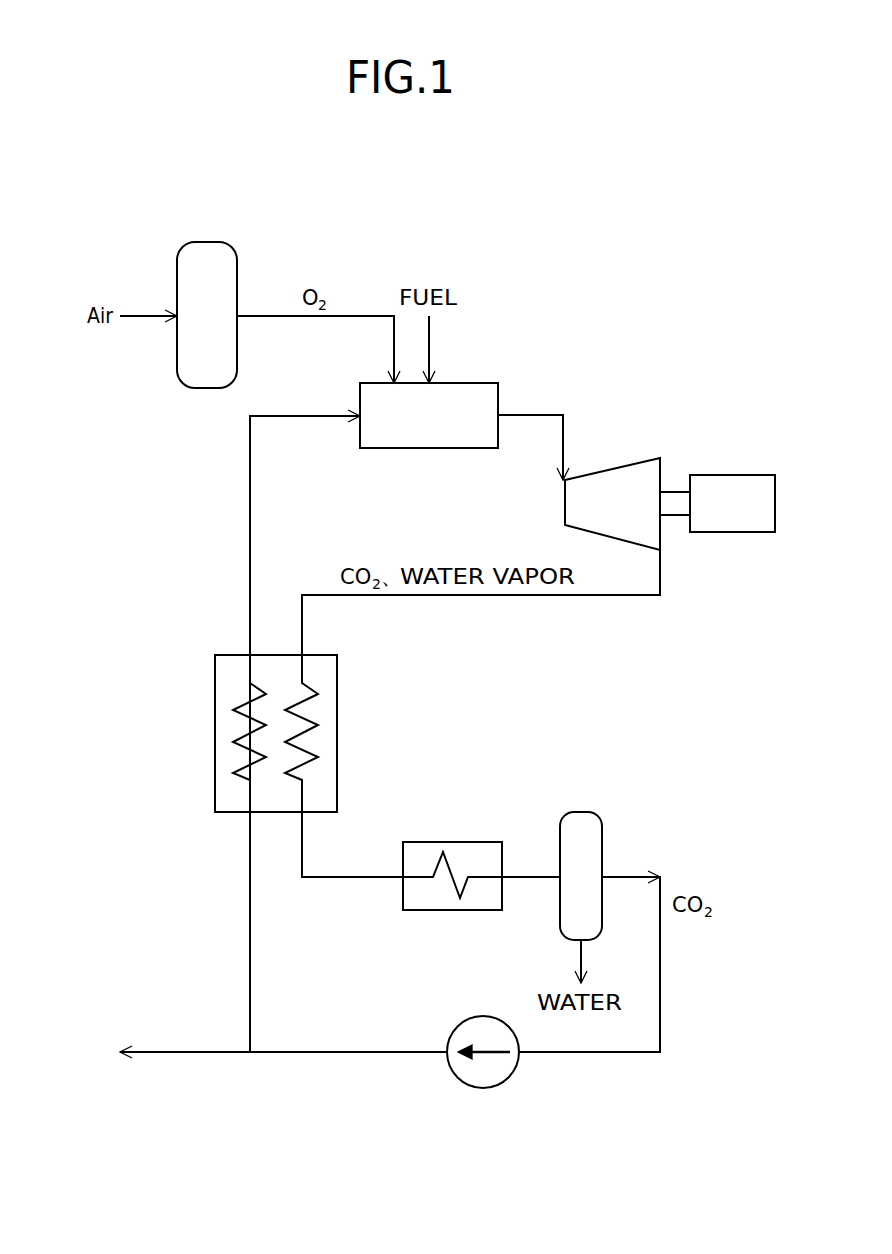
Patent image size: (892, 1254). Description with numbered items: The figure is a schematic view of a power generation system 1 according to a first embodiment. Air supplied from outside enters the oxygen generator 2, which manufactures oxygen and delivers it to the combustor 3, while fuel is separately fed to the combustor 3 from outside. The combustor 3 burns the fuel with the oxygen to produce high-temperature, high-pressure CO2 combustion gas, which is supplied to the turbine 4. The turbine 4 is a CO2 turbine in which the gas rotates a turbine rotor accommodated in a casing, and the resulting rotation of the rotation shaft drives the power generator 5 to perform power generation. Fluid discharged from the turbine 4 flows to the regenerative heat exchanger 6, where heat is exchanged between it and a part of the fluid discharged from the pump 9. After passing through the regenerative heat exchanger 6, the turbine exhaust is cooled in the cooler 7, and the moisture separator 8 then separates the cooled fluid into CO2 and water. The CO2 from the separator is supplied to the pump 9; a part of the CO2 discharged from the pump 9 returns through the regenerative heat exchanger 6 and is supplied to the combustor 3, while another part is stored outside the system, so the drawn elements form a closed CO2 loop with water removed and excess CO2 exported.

The power generation system 1 is at (432, 144).
The oxygen generator 2 is at (205, 242).
The combustor 3 is at (462, 383).
The turbine 4 is at (645, 458).
The power generator 5 is at (733, 475).
The regenerative heat exchanger 6 is at (215, 738).
The cooler 7 is at (455, 842).
The moisture separator 8 is at (583, 812).
The pump 9 is at (486, 1088).